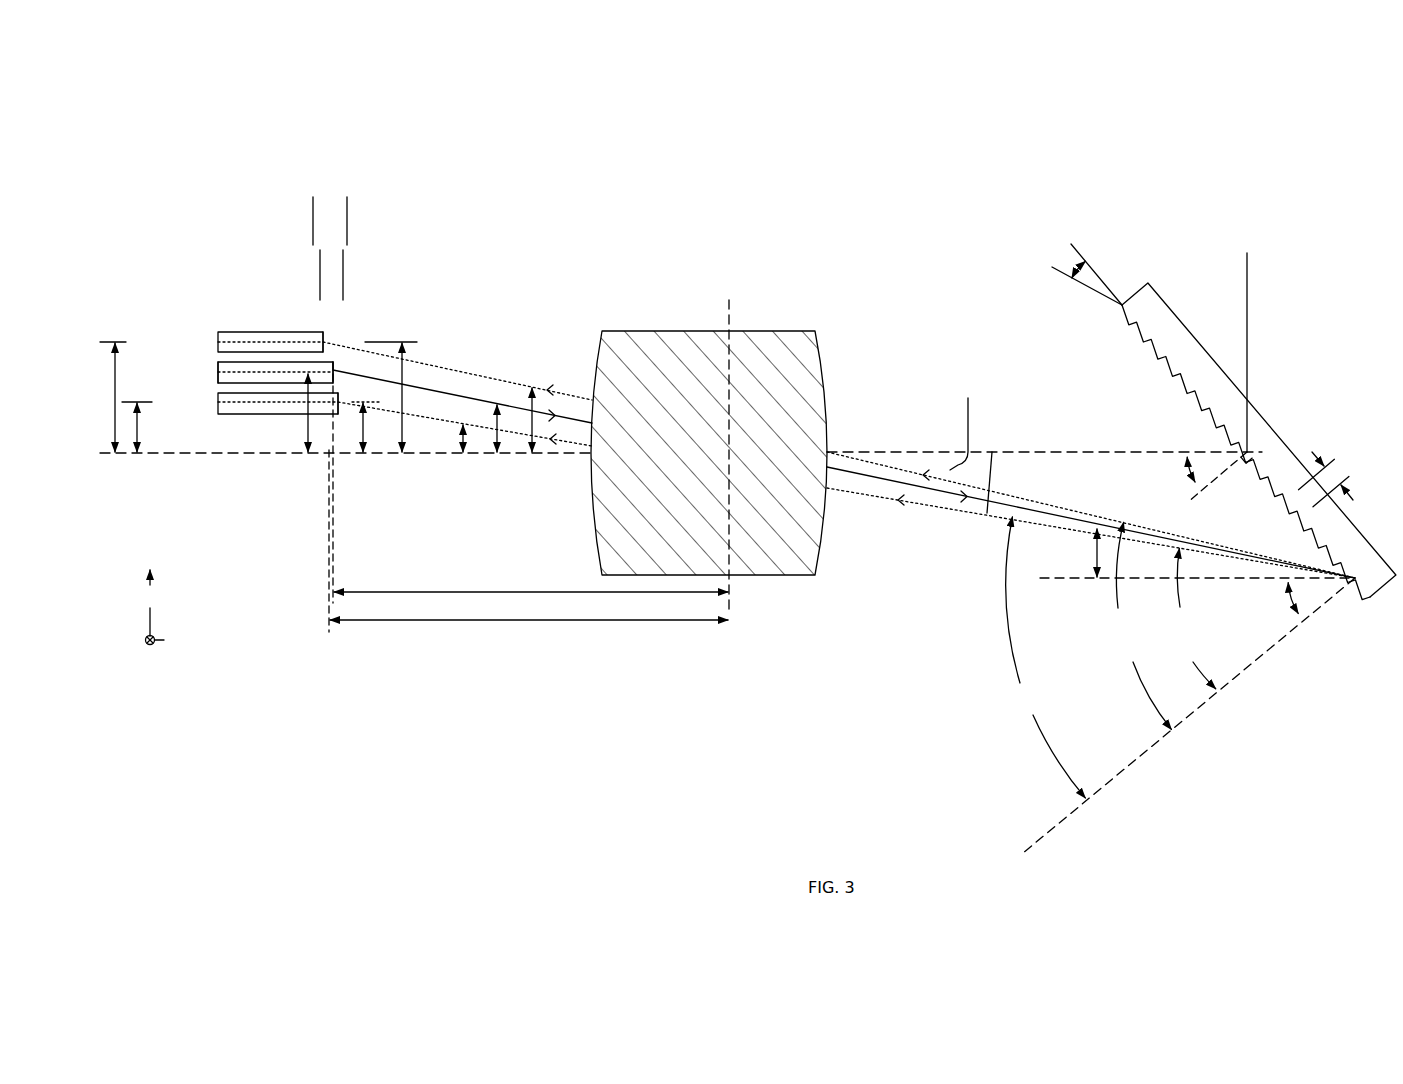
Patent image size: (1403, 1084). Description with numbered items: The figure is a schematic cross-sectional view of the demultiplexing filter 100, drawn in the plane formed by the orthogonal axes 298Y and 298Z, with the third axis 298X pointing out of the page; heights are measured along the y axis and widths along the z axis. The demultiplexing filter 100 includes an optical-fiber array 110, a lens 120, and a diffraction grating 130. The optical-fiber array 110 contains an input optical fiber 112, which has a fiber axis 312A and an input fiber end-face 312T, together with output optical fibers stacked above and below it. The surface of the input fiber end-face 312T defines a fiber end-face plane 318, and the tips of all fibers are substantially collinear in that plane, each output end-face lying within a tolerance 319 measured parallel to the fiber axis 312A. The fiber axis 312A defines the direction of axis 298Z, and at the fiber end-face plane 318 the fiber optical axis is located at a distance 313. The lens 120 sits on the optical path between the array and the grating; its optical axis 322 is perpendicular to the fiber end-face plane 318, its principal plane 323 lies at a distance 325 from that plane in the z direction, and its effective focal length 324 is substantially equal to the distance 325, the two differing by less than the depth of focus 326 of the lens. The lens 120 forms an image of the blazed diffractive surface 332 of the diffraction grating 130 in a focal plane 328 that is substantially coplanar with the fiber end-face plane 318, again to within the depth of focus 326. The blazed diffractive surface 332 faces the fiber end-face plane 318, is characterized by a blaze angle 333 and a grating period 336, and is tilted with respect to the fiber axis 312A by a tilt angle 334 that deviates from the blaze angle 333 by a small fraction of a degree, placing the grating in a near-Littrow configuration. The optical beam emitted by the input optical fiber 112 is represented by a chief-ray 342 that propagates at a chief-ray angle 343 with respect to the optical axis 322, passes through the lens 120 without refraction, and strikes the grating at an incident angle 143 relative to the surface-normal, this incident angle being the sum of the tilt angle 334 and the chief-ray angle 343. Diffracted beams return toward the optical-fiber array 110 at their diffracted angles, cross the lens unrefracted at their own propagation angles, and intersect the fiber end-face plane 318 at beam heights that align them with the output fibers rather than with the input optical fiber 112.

The demultiplexing filter 100 is at (1296, 140).
The optical-fiber array 110 is at (221, 246).
The input optical fiber 112 is at (218, 378).
The lens 120 is at (709, 453).
The diffraction grating 130 is at (1262, 414).
The incident angle 143 is at (1047, 657).
The axis 298X is at (150, 648).
The axis 298Y is at (155, 603).
The axis 298Z is at (183, 640).
The fiber axis 312A is at (218, 370).
The input fiber end-face 312T is at (339, 364).
The distance 313 is at (327, 457).
The fiber end-face plane 318 is at (336, 553).
The tolerance 319 is at (364, 270).
The optical axis 322 is at (200, 456).
The principal plane 323 is at (730, 308).
The effective focal length 324 is at (529, 623).
The distance 325 is at (531, 594).
The depth of focus 326 is at (366, 213).
The focal plane 328 is at (328, 554).
The blazed diffractive surface 332 is at (1131, 329).
The blaze angle 333 is at (1071, 278).
The tilt angle 334 is at (1244, 270).
The grating period 336 is at (1330, 462).
The chief-ray 342 is at (440, 391).
The chief-ray angle 343 is at (498, 428).